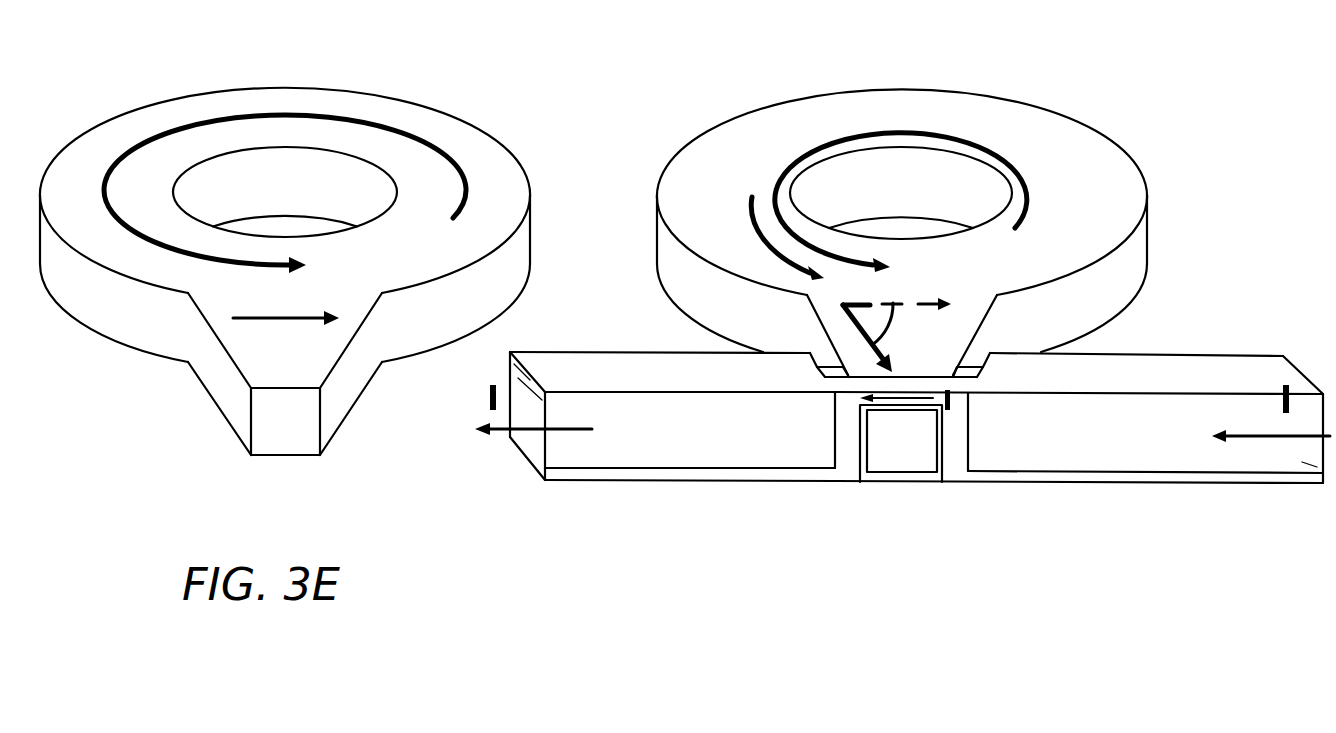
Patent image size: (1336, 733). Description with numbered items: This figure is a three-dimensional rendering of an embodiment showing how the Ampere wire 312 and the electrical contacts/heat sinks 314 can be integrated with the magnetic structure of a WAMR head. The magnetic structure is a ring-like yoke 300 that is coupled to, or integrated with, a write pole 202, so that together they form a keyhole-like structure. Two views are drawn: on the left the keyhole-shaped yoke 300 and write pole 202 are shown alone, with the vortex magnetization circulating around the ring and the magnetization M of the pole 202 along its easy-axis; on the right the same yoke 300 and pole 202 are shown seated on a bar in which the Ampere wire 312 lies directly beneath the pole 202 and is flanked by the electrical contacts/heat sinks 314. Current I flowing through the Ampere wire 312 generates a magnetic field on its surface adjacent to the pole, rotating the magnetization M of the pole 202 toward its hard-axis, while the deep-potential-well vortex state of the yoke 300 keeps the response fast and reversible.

The ring-like yoke 300 is at (327, 92).
The write pole 202 is at (248, 452).
The Ampere wire 312 is at (955, 452).
The electrical contacts/heat sinks 314 is at (607, 453).